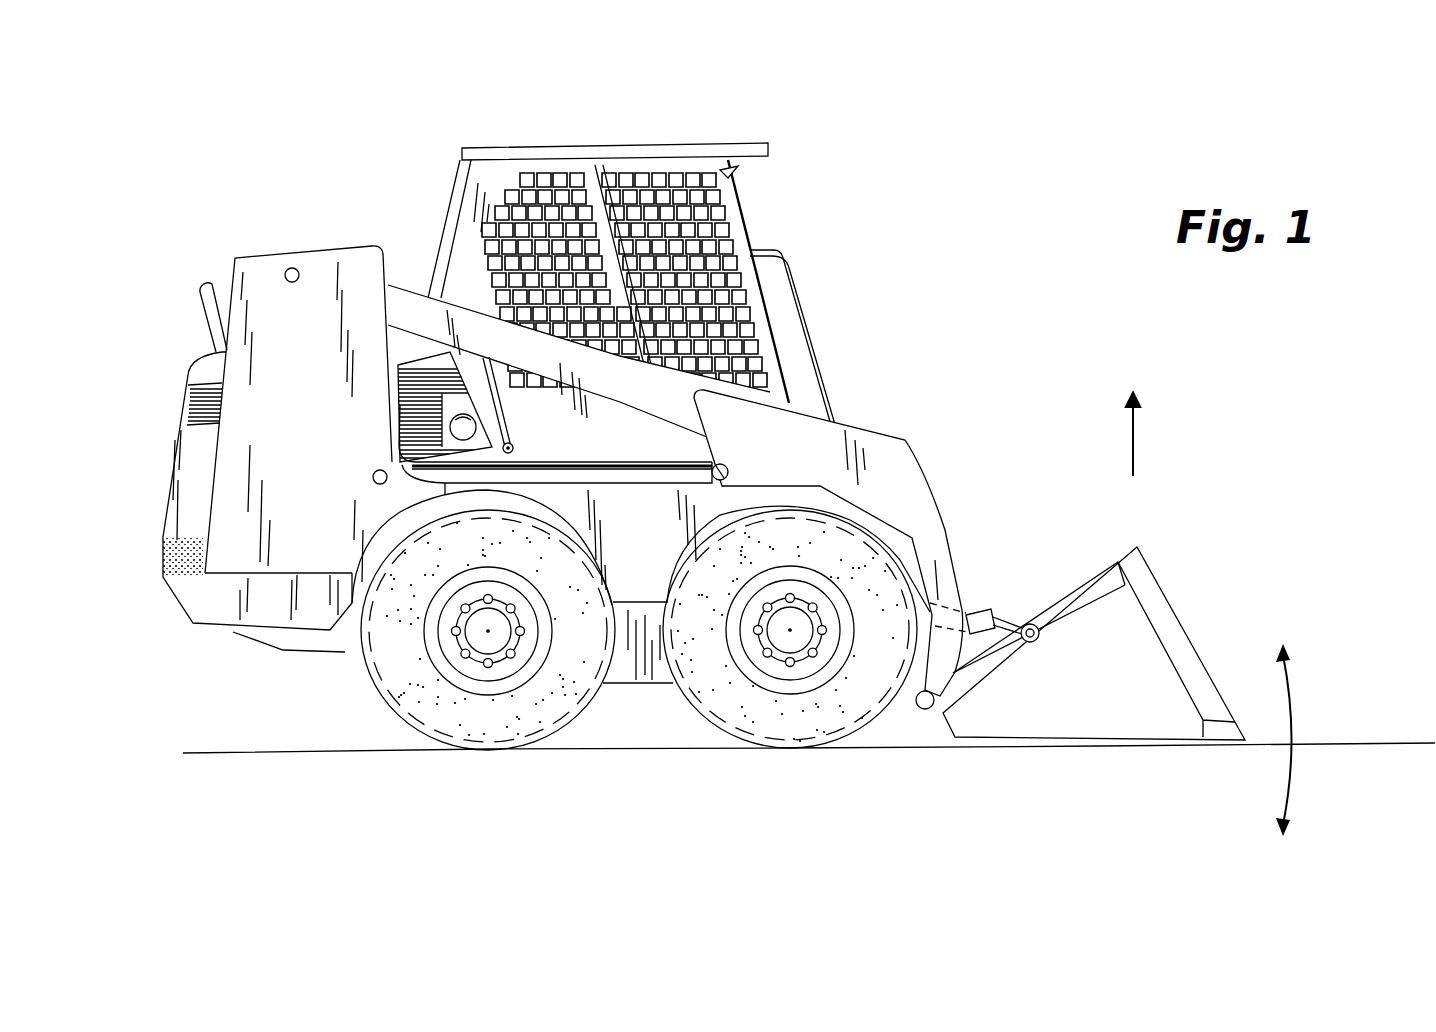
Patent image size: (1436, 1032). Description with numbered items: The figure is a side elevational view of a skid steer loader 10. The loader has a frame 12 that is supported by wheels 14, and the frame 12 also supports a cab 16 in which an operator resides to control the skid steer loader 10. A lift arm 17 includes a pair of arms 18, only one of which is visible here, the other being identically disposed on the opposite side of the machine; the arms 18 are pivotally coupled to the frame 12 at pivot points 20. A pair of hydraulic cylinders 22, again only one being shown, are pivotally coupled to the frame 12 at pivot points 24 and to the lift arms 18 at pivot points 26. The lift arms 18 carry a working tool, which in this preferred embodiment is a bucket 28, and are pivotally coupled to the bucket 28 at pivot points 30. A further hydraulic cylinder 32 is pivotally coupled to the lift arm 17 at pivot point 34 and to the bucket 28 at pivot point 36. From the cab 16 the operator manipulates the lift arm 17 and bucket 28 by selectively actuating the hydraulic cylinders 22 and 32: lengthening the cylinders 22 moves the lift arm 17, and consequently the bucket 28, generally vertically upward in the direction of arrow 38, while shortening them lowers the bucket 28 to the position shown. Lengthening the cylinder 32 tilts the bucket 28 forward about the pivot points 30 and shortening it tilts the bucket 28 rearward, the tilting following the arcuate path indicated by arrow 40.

The skid steer loader 10 is at (797, 236).
The frame 12 is at (222, 597).
The wheels 14 is at (478, 715).
The cab 16 is at (648, 152).
The lift arm 17 is at (938, 488).
The arms 18 is at (400, 298).
The pivot points 20 is at (288, 268).
The hydraulic cylinders 22 is at (622, 460).
The pivot points 24 is at (373, 476).
The pivot points 26 is at (722, 464).
The bucket 28 is at (1170, 630).
The pivot points 30 is at (920, 708).
The hydraulic cylinder 32 is at (975, 617).
The pivot point 34 is at (937, 603).
The pivot point 36 is at (1032, 624).
The arrow 38 is at (1135, 422).
The arrow 40 is at (1296, 695).